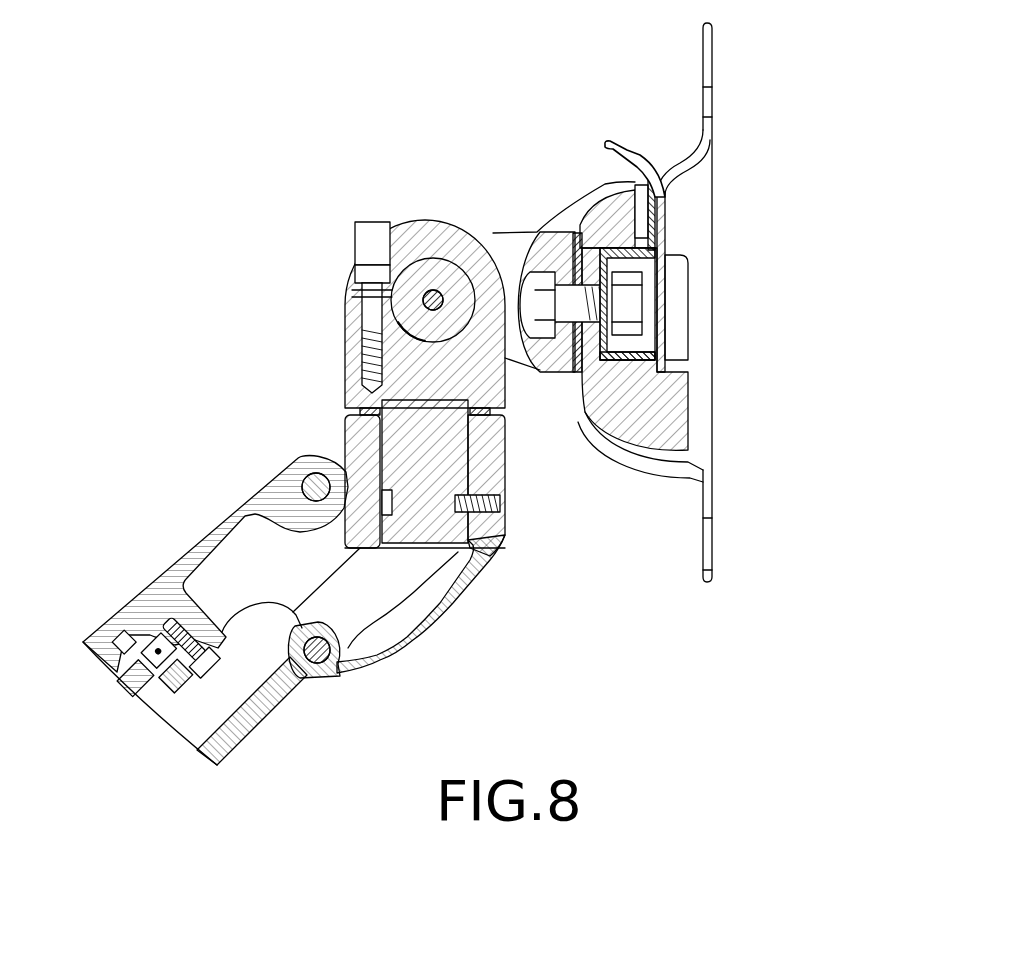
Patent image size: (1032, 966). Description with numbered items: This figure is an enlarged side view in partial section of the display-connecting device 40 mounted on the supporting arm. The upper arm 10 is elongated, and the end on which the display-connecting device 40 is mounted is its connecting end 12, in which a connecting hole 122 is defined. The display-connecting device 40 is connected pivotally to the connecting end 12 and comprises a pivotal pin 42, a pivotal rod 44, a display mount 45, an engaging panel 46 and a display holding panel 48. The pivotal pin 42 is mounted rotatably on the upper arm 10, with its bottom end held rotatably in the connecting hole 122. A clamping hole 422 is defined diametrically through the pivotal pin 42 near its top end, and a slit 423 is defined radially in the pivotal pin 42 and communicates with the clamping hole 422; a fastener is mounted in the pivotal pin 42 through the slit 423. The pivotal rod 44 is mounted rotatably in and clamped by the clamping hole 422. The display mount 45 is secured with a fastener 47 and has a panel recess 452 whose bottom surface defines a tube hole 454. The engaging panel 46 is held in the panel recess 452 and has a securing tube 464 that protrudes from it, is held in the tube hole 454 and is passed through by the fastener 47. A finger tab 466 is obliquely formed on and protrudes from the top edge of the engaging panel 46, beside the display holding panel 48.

The upper arm 10 is at (166, 559).
The connecting end 12 is at (272, 497).
The display-connecting device 40 is at (422, 212).
The pivotal pin 42 is at (352, 395).
The pivotal rod 44 is at (426, 280).
The display mount 45 is at (634, 463).
The engaging panel 46 is at (626, 140).
The fastener 47 is at (642, 305).
The display holding panel 48 is at (704, 45).
The connecting hole 122 is at (472, 452).
The clamping hole 422 is at (408, 320).
The slit 423 is at (352, 300).
The panel recess 452 is at (660, 266).
The tube hole 454 is at (655, 350).
The securing tube 464 is at (605, 250).
The finger tab 466 is at (606, 149).